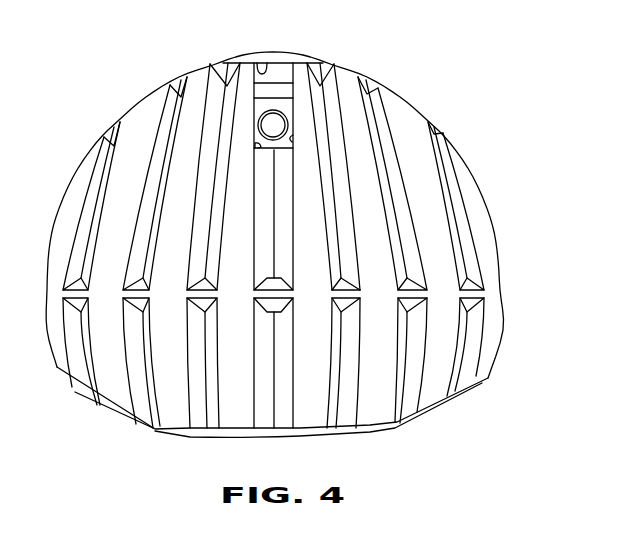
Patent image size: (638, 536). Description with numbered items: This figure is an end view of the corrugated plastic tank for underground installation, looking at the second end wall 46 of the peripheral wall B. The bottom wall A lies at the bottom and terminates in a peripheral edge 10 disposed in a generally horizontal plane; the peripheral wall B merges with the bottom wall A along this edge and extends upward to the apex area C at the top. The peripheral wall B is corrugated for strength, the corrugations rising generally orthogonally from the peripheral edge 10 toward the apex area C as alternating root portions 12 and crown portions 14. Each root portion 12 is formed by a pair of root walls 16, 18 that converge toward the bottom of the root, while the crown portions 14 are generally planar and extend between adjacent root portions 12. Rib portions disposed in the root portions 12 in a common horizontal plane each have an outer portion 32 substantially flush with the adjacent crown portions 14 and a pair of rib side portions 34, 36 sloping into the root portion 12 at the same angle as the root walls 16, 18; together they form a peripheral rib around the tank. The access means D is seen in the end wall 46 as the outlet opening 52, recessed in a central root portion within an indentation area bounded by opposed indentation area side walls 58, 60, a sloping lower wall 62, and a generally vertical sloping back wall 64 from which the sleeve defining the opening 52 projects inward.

The peripheral edge 10 is at (370, 427).
The root portion 12 is at (413, 320).
The crown portion 14 is at (433, 343).
The root wall 16 is at (398, 393).
The root wall 18 is at (413, 378).
The outer portion 32 is at (330, 292).
The rib side portion 34 is at (345, 284).
The rib side portion 36 is at (348, 306).
The second end wall 46 is at (480, 143).
The outlet opening 52 is at (270, 125).
The indentation area side wall 58 is at (291, 139).
The indentation area side wall 60 is at (263, 70).
The sloping lower wall 62 is at (258, 148).
The back wall 64 is at (260, 105).
The bottom wall A is at (171, 446).
The peripheral wall B is at (520, 268).
The apex area C is at (281, 44).
The access means D is at (282, 90).